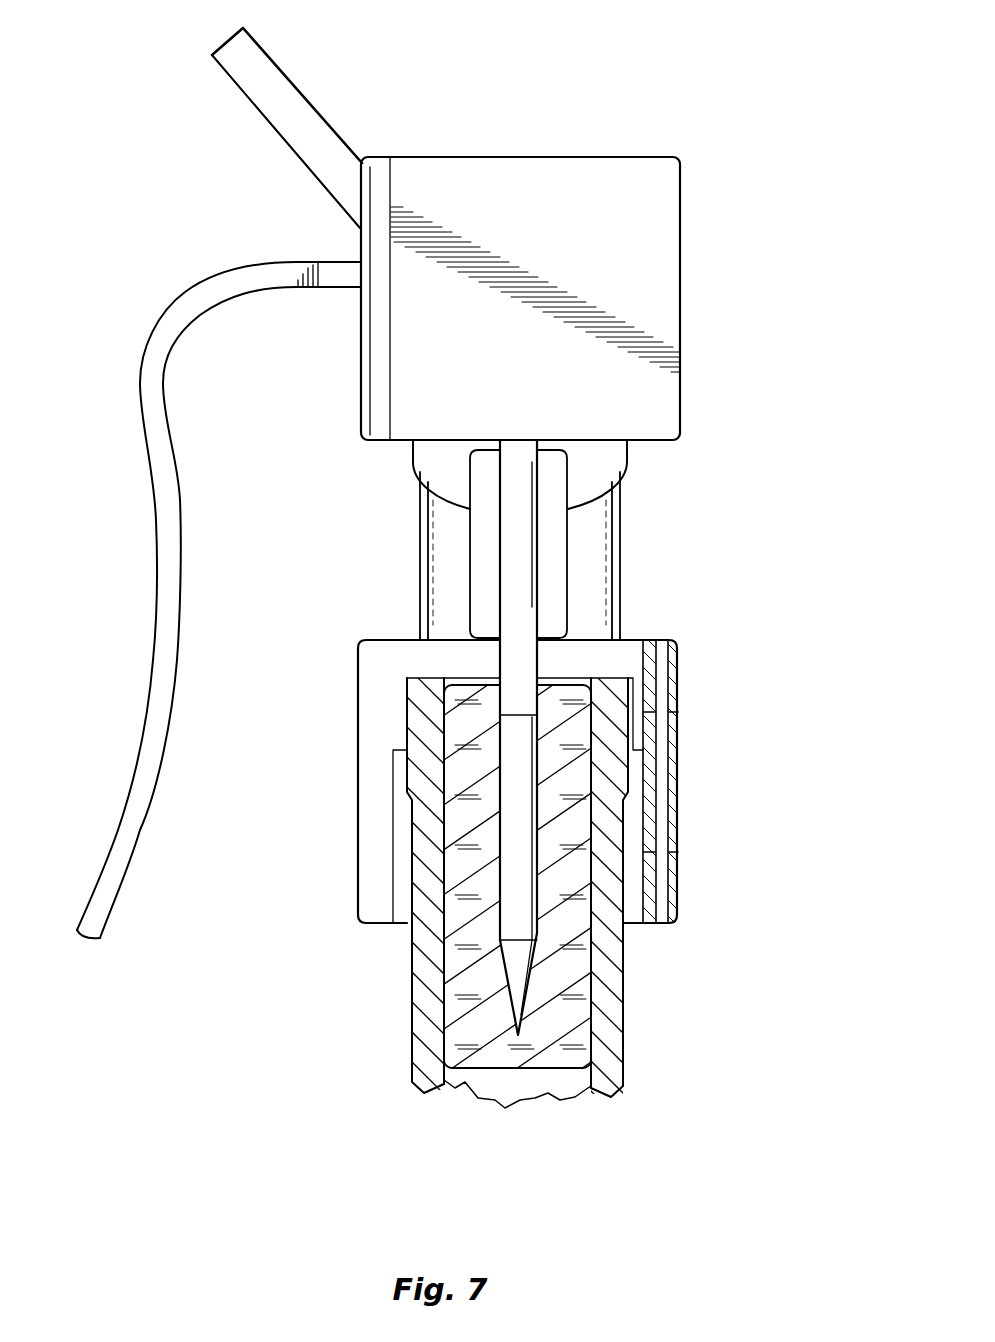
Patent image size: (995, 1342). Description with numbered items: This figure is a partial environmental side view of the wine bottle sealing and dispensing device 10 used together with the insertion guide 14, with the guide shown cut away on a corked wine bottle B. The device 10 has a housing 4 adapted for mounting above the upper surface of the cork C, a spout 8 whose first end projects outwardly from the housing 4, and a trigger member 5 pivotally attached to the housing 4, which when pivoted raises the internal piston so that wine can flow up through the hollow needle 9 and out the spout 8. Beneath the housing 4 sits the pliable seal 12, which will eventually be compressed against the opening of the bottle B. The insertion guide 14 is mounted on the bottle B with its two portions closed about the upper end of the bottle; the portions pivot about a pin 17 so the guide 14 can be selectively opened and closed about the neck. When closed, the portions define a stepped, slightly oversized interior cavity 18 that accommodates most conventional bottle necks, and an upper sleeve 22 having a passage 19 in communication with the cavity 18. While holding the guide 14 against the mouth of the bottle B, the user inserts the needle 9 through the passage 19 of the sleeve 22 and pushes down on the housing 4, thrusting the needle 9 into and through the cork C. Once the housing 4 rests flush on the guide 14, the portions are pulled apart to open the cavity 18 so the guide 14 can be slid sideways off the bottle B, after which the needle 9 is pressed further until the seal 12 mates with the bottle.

The housing 4 is at (680, 288).
The trigger member 5 is at (148, 668).
The spout 8 is at (305, 95).
The hollow needle 9 is at (532, 602).
The wine bottle sealing and dispensing device 10 is at (720, 192).
The seal 12 is at (630, 463).
The insertion guide 14 is at (712, 712).
The pin 17 is at (660, 783).
The interior cavity 18 is at (425, 935).
The passage 19 is at (500, 641).
The upper sleeve 22 is at (568, 555).
The wine bottle B is at (423, 1037).
The cork C is at (578, 1033).